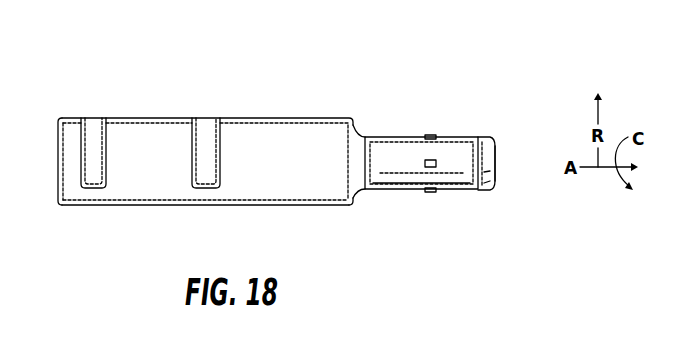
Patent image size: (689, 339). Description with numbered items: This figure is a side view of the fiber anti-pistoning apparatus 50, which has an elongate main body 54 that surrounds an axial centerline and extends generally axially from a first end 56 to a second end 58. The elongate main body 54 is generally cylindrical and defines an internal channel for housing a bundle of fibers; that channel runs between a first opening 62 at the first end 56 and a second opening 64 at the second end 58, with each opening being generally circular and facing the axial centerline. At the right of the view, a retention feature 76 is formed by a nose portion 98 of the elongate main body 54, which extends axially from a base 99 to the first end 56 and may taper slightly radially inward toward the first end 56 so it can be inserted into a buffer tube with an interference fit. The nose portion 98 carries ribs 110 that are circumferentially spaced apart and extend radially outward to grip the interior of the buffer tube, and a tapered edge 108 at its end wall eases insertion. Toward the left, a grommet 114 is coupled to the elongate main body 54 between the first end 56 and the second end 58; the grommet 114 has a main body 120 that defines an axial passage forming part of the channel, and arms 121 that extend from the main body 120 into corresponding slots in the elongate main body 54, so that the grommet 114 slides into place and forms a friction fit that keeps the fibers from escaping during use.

The fiber anti-pistoning apparatus 50 is at (143, 110).
The grommet 114 is at (205, 117).
The second opening 64 is at (53, 154).
The second end 58 is at (57, 193).
The arms 121 is at (93, 168).
The main body 120 is at (189, 153).
The elongate main body 54 is at (282, 194).
The base 99 is at (357, 191).
The retention feature 76 is at (432, 112).
The nose portion 98 is at (460, 146).
The ribs 110 is at (432, 168).
The first end 56 is at (496, 145).
The tapered edge 108 is at (487, 191).
The first opening 62 is at (505, 164).